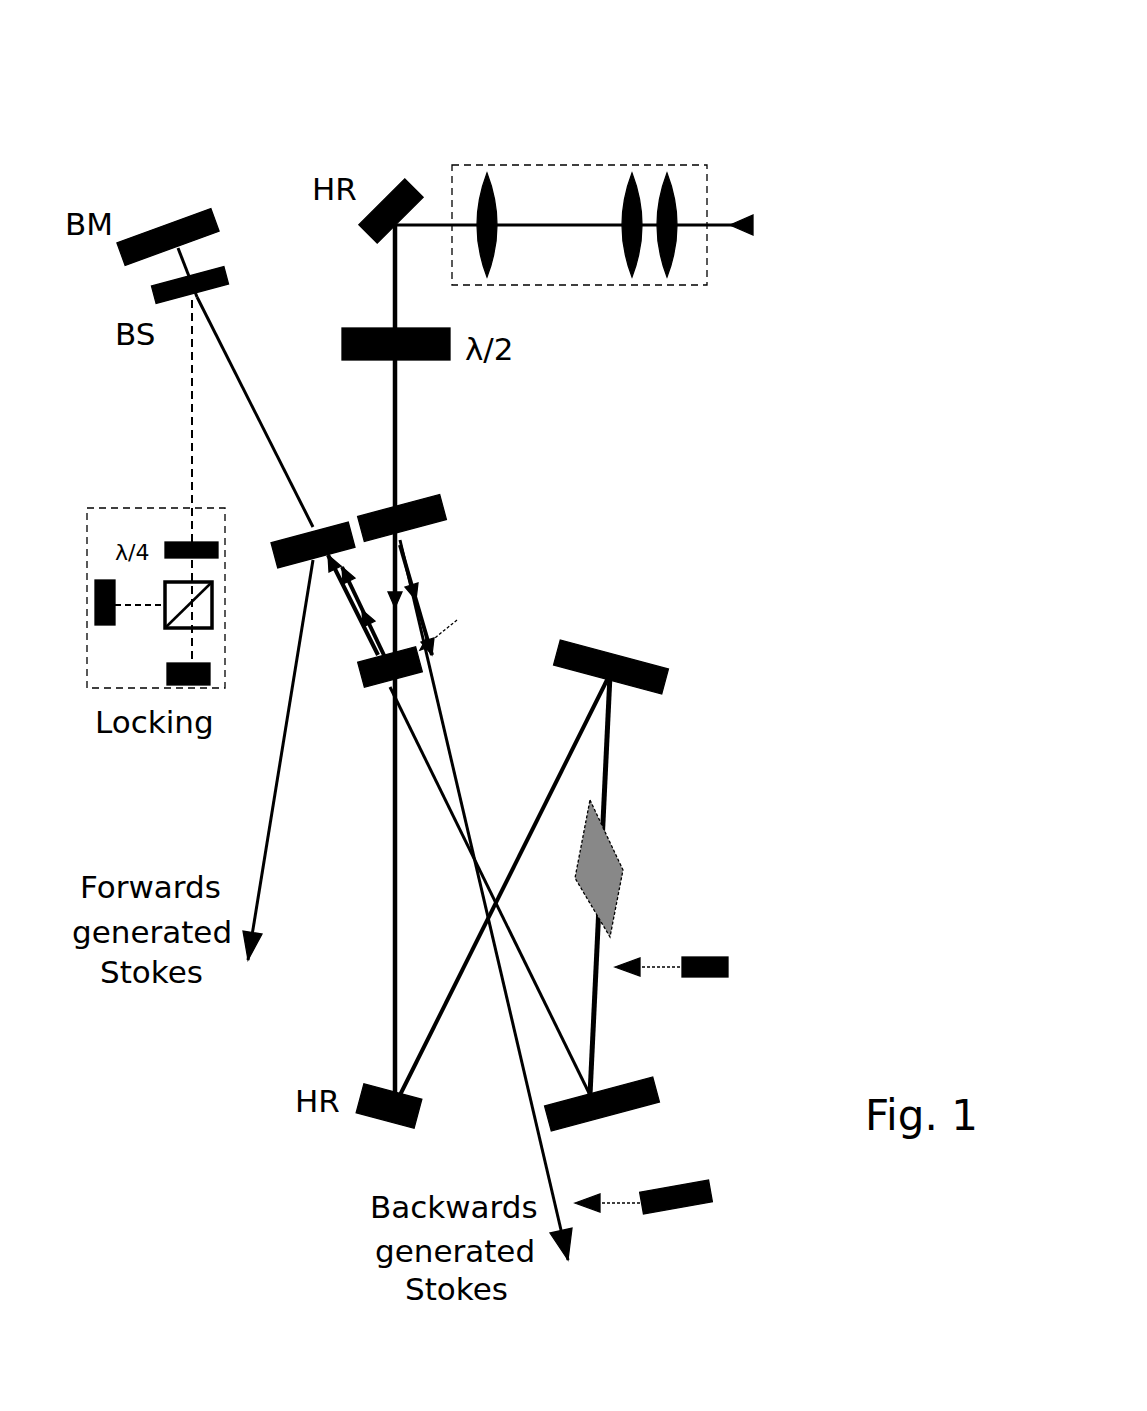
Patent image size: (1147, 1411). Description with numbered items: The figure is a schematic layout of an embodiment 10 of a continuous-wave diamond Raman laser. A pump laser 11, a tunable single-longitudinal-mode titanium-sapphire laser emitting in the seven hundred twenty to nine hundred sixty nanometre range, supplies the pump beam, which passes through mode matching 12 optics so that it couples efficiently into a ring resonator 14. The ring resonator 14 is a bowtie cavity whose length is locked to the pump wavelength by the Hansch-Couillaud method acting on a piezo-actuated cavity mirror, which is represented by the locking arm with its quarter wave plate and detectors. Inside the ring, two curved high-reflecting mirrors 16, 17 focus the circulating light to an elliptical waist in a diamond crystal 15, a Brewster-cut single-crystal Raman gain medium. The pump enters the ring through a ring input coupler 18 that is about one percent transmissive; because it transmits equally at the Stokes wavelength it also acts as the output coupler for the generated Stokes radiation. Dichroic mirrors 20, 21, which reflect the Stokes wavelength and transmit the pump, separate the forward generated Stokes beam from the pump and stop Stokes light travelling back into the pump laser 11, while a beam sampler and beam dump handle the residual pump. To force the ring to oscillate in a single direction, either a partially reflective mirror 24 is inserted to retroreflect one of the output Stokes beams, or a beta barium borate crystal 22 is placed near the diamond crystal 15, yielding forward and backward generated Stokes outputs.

The embodiment 10 is at (900, 458).
The pump laser 11 is at (885, 165).
The mode matching 12 is at (592, 98).
The ring resonator 14 is at (770, 752).
The diamond crystal 15 is at (617, 840).
The curved mirror 16 is at (632, 650).
The curved mirror 17 is at (620, 1075).
The ring input coupler 18 is at (370, 687).
The dichroic mirror 20 is at (318, 522).
The dichroic mirror 21 is at (432, 492).
The BBO crystal 22 is at (715, 940).
The partially reflective mirror 24 is at (710, 1162).